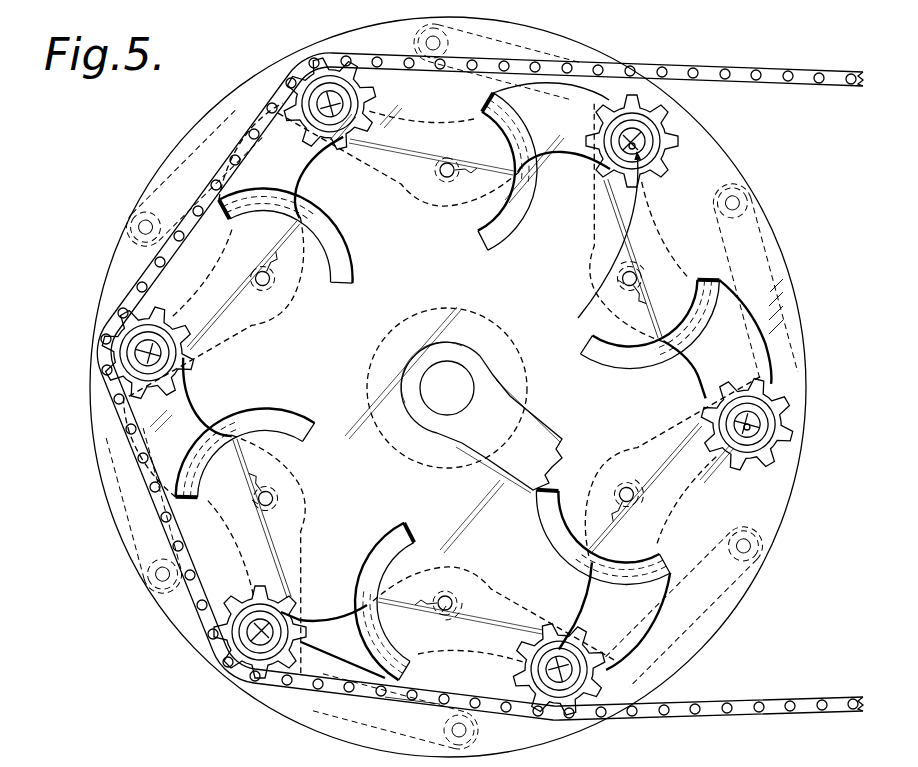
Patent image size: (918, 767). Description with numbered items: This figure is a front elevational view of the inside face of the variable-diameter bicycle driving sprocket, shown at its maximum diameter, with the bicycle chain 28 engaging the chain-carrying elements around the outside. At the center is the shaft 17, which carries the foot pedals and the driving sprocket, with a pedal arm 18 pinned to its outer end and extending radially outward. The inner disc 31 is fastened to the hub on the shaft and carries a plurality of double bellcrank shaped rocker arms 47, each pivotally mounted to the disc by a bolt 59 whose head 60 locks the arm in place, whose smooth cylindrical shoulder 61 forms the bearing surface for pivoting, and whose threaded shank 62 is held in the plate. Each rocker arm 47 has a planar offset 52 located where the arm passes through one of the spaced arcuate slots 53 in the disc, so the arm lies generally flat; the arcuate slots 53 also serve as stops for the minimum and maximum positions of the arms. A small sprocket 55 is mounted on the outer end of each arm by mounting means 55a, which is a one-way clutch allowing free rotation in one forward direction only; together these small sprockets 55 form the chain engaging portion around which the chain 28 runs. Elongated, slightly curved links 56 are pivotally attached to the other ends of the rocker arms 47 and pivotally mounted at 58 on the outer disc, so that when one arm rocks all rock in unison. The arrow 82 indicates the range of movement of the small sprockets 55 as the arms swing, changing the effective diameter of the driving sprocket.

The shaft 17 is at (455, 362).
The pedal arm 18 is at (548, 434).
The bicycle chain 28 is at (748, 70).
The inner disc 31 is at (92, 318).
The rocker arms 47 is at (426, 120).
The planar offset 52 is at (385, 697).
The arcuate slots 53 is at (352, 263).
The small sprocket 55 is at (668, 132).
The mounting means 55a is at (672, 158).
The links 56 is at (207, 152).
The pivotal mounting 58 is at (135, 230).
The bolt 59 is at (438, 176).
The head 60 is at (642, 270).
The cylindrical shoulder 61 is at (618, 281).
The threaded shank 62 is at (447, 188).
The arrow 82 is at (620, 224).